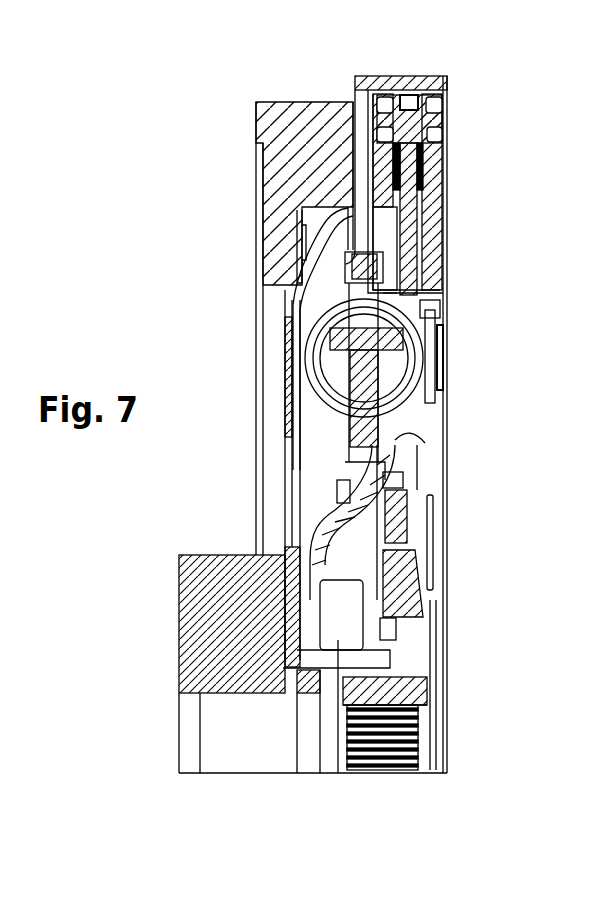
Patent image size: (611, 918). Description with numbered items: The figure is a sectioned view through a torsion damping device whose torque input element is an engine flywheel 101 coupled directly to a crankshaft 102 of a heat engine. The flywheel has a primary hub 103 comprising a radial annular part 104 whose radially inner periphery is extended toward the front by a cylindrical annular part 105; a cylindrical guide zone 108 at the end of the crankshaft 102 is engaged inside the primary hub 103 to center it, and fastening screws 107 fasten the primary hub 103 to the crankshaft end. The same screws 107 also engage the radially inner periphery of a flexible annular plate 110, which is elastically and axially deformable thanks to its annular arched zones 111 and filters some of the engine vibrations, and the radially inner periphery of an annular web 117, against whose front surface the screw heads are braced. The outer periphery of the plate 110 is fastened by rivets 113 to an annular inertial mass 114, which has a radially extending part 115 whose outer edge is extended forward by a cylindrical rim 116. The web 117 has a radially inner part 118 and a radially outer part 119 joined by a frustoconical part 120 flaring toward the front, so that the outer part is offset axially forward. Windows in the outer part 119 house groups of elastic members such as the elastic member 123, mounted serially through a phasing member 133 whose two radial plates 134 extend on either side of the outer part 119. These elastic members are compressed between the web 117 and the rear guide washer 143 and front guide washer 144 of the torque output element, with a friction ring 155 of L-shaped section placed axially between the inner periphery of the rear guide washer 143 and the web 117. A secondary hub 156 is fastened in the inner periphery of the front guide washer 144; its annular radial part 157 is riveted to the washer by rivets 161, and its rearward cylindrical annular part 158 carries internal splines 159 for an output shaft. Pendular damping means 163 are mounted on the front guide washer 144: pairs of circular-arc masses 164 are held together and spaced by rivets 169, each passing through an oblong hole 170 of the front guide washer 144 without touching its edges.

The engine flywheel 101 is at (180, 150).
The crankshaft 102 is at (206, 566).
The primary hub 103 is at (290, 695).
The radial annular part 104 is at (292, 593).
The cylindrical annular part 105 is at (333, 652).
The fastening screws 107 is at (342, 633).
The cylindrical guide zone 108 is at (303, 694).
The flexible annular plate 110 is at (287, 367).
The annular arched zones 111 is at (283, 298).
The rivets 113 is at (283, 241).
The annular inertial mass 114 is at (242, 104).
The radially extending part 115 is at (284, 194).
The cylindrical rim 116 is at (397, 84).
The annular web 117 is at (380, 387).
The radially inner part 118 is at (382, 630).
The radially outer part 119 is at (437, 313).
The frustoconical part 120 is at (408, 541).
The elastic member 123 is at (432, 367).
The phasing member 133 is at (408, 267).
The radial plates 134 is at (290, 320).
The rear guide washer 143 is at (358, 180).
The front guide washer 144 is at (423, 443).
The friction ring 155 is at (382, 509).
The secondary hub 156 is at (376, 690).
The annular radial part 157 is at (401, 568).
The cylindrical annular part 158 is at (411, 697).
The splines 159 is at (380, 743).
The rivets 161 is at (432, 527).
The pendular damping means 163 is at (465, 191).
The masses 164 is at (360, 175).
The rivets 169 is at (428, 129).
The oblong hole 170 is at (411, 101).